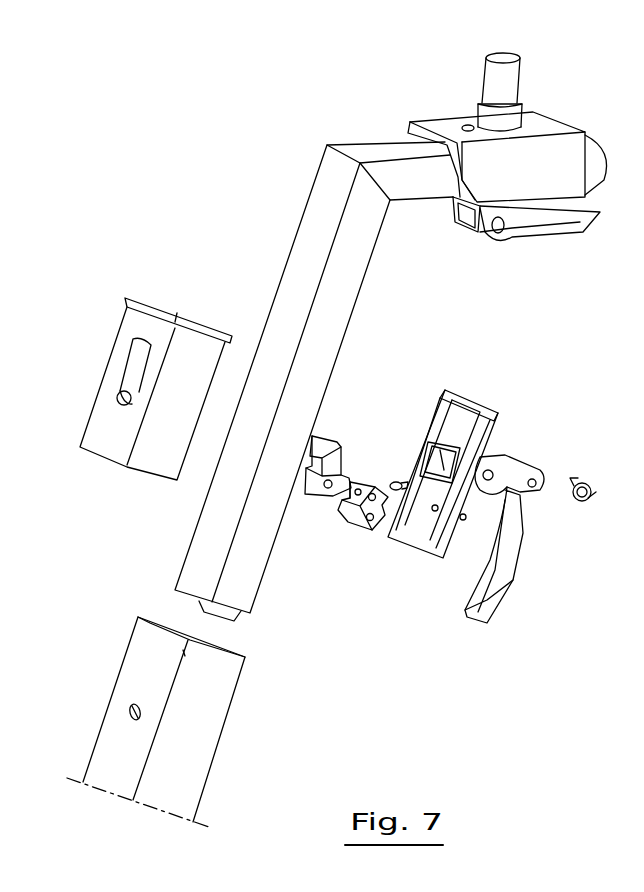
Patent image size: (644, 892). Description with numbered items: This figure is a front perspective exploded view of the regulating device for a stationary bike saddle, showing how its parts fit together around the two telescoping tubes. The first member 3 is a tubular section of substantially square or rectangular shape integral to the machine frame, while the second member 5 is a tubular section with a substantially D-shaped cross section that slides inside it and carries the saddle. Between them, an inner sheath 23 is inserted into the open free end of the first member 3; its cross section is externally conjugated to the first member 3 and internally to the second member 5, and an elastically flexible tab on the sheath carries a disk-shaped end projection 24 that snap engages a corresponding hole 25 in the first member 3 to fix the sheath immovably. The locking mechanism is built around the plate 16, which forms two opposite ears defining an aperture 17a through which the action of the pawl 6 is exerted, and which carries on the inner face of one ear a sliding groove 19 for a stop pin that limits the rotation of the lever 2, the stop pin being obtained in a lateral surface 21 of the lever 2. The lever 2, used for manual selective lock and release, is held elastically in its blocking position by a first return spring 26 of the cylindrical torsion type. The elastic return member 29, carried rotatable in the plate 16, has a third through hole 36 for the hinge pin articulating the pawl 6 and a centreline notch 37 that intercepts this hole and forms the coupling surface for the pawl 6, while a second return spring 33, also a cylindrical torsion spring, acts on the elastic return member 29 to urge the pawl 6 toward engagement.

The second member 5 is at (290, 245).
The pawl 6 is at (343, 430).
The first member 3 is at (177, 722).
The inner sheath 23 is at (137, 409).
The disk-shaped end projection 24 is at (120, 400).
The hole 25 is at (130, 710).
The second return spring 33 is at (398, 480).
The sliding groove 19 is at (447, 392).
The plate 16 is at (462, 495).
The aperture 17a is at (430, 523).
The centreline notch 37 is at (345, 505).
The third through hole 36 is at (338, 546).
The elastic return member 29 is at (366, 530).
The lateral surface 21 is at (535, 554).
The lever 2 is at (500, 553).
The first return spring 26 is at (586, 482).